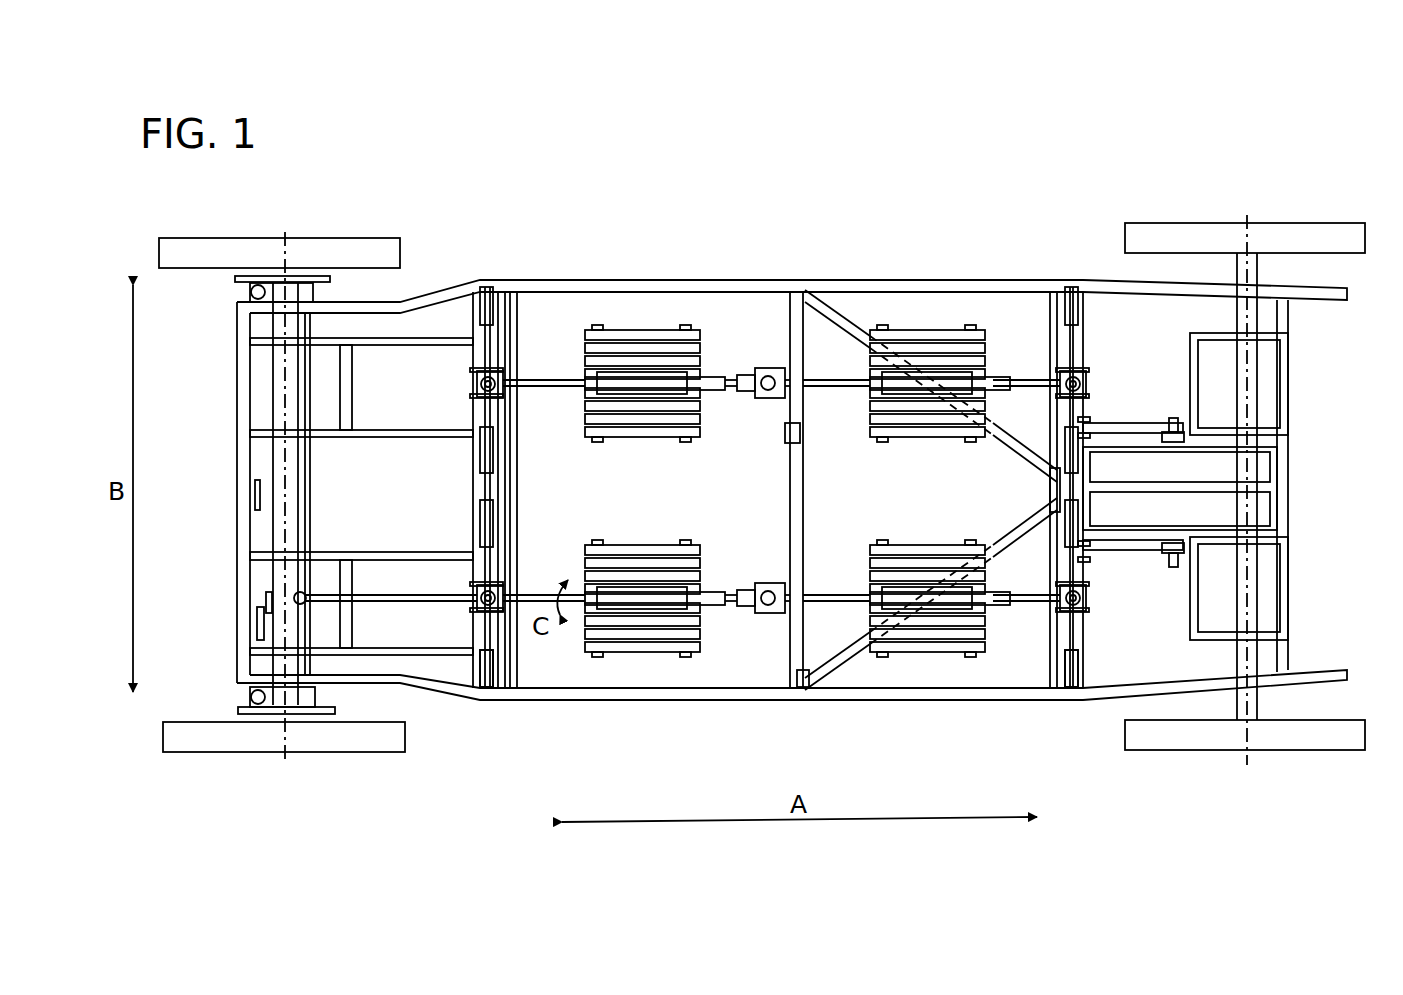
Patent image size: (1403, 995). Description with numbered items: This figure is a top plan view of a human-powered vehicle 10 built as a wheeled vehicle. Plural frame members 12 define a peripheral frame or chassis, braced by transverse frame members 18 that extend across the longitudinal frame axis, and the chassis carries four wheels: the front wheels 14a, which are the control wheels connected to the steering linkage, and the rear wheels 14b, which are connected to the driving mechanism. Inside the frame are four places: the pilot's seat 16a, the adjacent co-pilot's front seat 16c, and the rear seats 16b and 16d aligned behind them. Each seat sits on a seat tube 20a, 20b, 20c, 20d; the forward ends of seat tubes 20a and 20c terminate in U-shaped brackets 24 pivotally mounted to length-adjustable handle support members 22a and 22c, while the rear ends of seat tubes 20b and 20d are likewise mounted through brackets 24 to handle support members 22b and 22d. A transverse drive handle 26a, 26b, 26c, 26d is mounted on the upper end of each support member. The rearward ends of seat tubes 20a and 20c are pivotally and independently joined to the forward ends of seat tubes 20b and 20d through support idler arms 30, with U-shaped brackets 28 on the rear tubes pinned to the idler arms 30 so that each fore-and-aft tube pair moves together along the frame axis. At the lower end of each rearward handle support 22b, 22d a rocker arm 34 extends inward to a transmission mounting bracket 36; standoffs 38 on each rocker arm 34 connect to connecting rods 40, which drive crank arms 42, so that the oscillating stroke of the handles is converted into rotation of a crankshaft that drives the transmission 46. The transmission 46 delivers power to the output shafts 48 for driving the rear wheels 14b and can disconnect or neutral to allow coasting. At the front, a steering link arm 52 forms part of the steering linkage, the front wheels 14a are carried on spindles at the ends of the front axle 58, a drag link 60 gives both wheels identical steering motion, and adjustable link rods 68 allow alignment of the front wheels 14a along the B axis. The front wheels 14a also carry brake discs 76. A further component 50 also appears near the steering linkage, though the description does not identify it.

The vehicle 10 is at (501, 95).
The frame members 12 is at (237, 365).
The front wheels 14a is at (290, 250).
The rear wheels 14b is at (1253, 230).
The seat 16a is at (592, 540).
The seat 16b is at (878, 540).
The seat 16c is at (592, 440).
The seat 16d is at (878, 440).
The transverse frame members 18 is at (518, 492).
The seat tube 20a is at (537, 597).
The seat tube 20b is at (843, 592).
The seat tube 20c is at (537, 382).
The seat tube 20d is at (843, 390).
The handle support member 22a is at (475, 597).
The handle support member 22b is at (1087, 597).
The handle support member 22c is at (475, 383).
The handle support member 22d is at (1085, 385).
The U-shaped brackets 24 is at (505, 405).
The transverse drive handle 26a is at (488, 690).
The transverse drive handle 26b is at (1070, 690).
The transverse drive handle 26c is at (488, 290).
The transverse drive handle 26d is at (1070, 290).
The U-shaped brackets 28 is at (768, 372).
The support idler arms 30 is at (772, 400).
The rocker arm 34 is at (1085, 415).
The transmission mounting bracket 36 is at (1098, 430).
The standoffs 38 is at (1052, 478).
The connecting rods 40 is at (1137, 455).
The crank arms 42 is at (1173, 445).
The transmission 46 is at (1262, 460).
The output shafts 48 is at (1255, 372).
The steering shaft 50 is at (380, 605).
The steering link arm 52 is at (268, 598).
The front axle 58 is at (300, 465).
The drag link 60 is at (312, 520).
The link rods 68 is at (258, 622).
The discs 76 is at (235, 280).